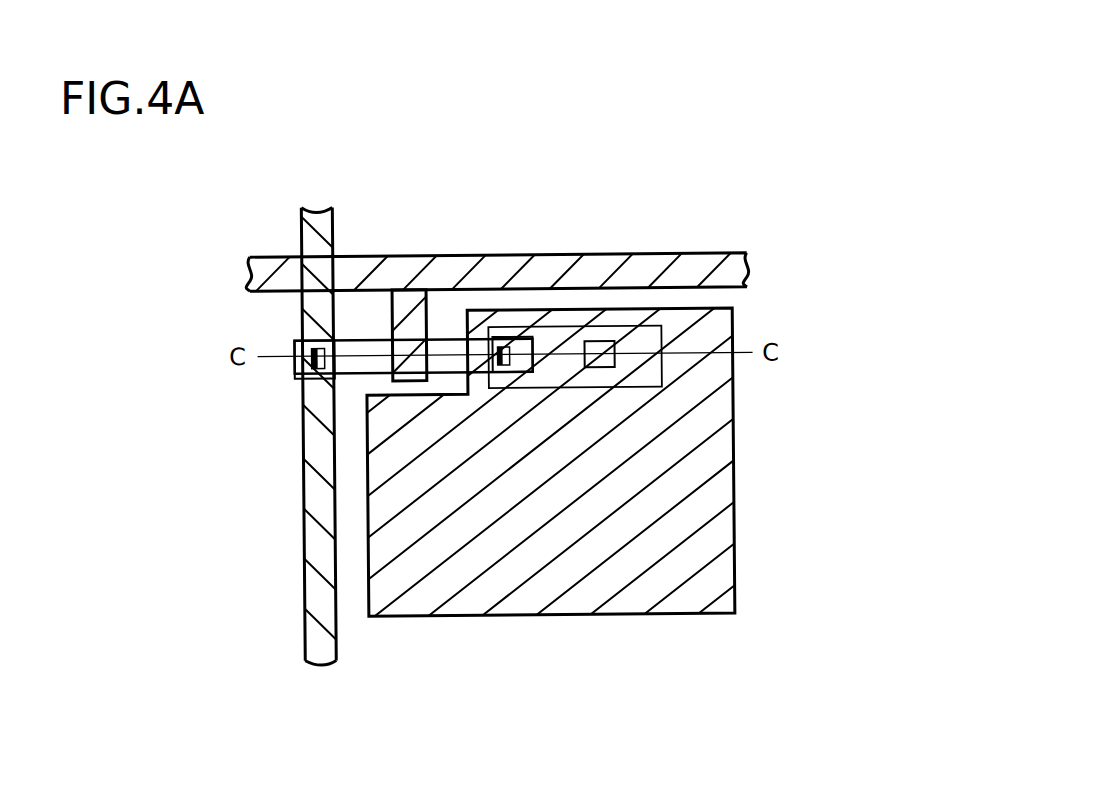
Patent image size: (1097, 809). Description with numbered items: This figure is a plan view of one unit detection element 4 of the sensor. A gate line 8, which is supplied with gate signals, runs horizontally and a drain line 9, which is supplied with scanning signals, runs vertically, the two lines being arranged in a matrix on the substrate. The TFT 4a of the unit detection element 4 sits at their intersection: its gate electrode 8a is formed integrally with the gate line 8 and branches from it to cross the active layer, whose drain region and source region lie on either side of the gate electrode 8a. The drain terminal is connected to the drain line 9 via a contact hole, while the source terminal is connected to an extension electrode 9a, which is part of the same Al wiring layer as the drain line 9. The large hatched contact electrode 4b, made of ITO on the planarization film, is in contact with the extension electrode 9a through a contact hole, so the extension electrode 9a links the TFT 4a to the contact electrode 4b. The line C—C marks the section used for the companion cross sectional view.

The unit detection element 4 is at (737, 203).
The TFT 4a is at (451, 303).
The contact electrode 4b is at (699, 477).
The gate line 8 is at (729, 268).
The gate electrode 8a is at (410, 305).
The drain line 9 is at (322, 217).
The extension electrode 9a is at (560, 330).